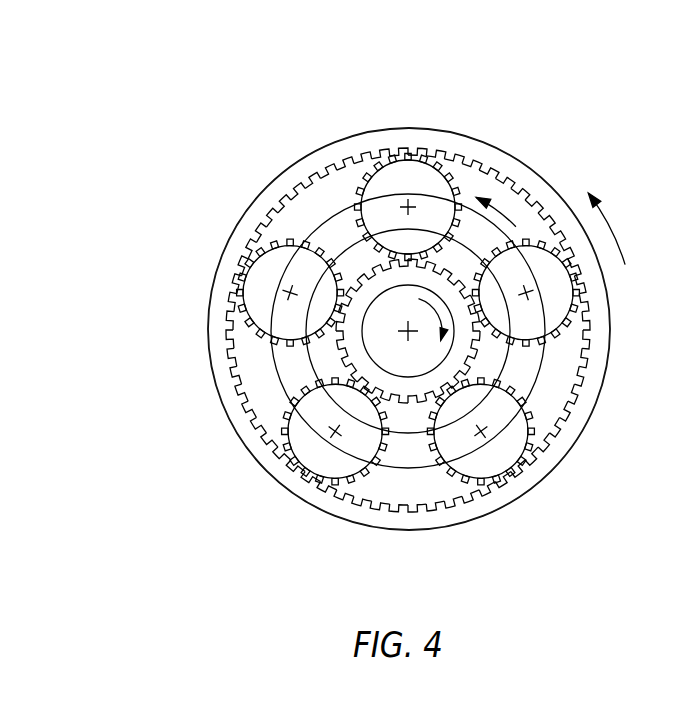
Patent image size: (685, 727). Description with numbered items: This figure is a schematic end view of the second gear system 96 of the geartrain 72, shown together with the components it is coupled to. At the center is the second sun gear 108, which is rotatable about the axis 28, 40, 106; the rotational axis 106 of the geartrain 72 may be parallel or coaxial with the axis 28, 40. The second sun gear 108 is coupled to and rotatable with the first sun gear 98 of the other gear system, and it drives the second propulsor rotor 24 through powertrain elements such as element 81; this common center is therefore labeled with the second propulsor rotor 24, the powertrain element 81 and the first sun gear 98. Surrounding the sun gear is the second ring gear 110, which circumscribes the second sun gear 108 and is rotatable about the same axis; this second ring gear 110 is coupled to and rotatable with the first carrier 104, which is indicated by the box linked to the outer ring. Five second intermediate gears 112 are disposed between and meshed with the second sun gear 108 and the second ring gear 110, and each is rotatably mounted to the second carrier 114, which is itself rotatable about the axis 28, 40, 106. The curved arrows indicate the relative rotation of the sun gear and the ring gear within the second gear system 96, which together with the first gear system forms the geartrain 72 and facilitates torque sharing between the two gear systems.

The first carrier 104 is at (333, 146).
The second ring gear 110 is at (385, 128).
The second carrier 114 is at (328, 218).
The second sun gear 108 is at (312, 356).
The second intermediate gears 112 is at (450, 174).
The second propulsor rotor 24 is at (277, 402).
The powertrain element 81 is at (277, 402).
The first sun gear 98 is at (277, 402).
The axis 28 is at (408, 434).
The axis 40 is at (408, 434).
The rotational axis 106 is at (410, 334).
The geartrain 72 is at (409, 282).
The second gear system 96 is at (548, 125).